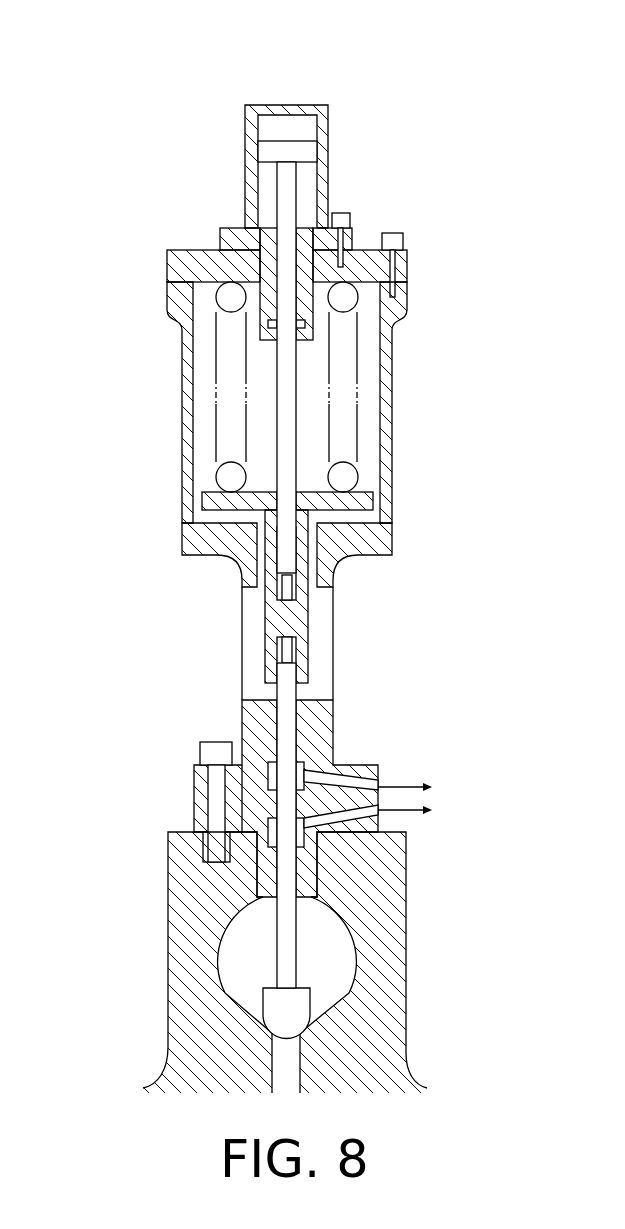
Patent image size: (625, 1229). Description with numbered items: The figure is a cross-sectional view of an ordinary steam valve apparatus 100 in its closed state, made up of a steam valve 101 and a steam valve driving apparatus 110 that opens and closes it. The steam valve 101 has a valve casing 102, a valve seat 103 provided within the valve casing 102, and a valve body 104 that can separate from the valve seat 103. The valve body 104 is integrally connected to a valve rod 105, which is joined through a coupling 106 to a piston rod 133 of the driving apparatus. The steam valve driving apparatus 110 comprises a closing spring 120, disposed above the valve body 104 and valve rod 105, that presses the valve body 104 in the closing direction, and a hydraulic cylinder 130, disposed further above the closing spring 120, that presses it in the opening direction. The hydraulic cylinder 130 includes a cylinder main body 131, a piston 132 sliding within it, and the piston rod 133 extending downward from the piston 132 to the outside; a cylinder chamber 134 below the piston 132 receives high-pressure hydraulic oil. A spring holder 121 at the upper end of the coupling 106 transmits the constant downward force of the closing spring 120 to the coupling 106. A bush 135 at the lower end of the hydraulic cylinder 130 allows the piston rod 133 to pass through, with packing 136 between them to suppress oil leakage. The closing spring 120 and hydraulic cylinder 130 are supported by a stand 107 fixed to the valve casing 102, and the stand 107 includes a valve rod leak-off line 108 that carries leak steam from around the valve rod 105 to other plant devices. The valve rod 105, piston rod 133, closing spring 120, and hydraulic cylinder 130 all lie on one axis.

The steam valve apparatus 100 is at (294, 549).
The steam valve driving apparatus 110 is at (249, 329).
The steam valve 101 is at (257, 801).
The valve casing 102 is at (405, 1057).
The valve seat 103 is at (270, 1033).
The valve body 104 is at (312, 996).
The valve rod 105 is at (298, 940).
The coupling 106 is at (308, 622).
The stand 107 is at (320, 713).
The valve rod leak-off line 108 is at (357, 815).
The closing spring 120 is at (356, 373).
The spring holder 121 is at (363, 498).
The hydraulic cylinder 130 is at (309, 210).
The cylinder main body 131 is at (320, 185).
The piston 132 is at (308, 150).
The piston rod 133 is at (287, 430).
The cylinder chamber 134 is at (267, 188).
The bush 135 is at (263, 310).
The packing 136 is at (314, 323).